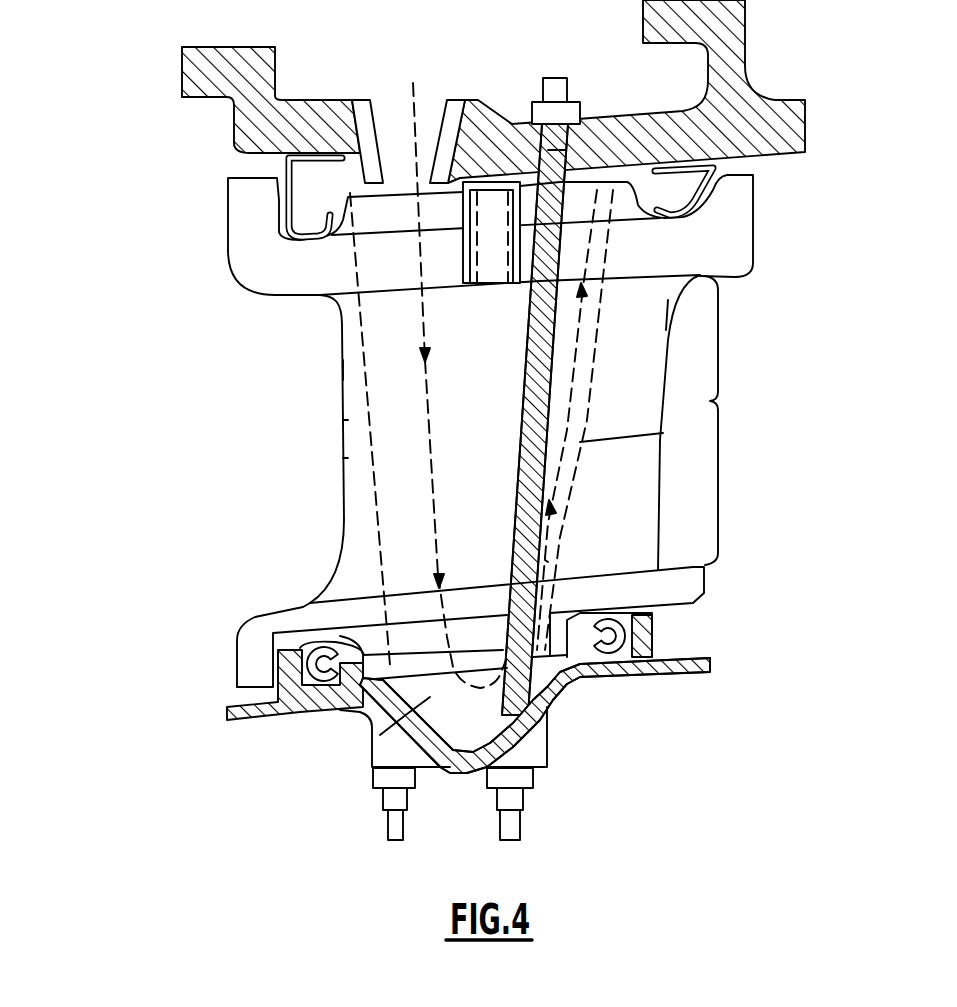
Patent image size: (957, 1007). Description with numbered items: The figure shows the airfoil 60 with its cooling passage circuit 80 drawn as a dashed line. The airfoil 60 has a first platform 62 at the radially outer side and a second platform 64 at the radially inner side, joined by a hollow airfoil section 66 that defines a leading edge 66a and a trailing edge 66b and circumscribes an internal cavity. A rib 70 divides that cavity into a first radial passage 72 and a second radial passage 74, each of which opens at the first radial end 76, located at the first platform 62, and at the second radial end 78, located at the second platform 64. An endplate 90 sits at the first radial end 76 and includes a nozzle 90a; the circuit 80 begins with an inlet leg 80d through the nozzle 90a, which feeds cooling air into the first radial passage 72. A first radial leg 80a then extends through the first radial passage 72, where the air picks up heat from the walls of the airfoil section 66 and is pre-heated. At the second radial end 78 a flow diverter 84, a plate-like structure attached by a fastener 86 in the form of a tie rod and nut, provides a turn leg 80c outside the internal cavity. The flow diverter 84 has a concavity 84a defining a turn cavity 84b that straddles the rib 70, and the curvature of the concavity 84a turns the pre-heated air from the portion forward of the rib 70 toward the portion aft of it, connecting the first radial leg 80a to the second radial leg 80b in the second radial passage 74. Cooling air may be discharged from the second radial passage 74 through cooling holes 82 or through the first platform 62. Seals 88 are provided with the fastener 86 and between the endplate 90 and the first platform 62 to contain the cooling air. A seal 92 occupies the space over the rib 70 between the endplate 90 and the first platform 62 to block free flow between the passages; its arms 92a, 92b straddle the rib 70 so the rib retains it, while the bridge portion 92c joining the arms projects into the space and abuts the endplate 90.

The airfoil 60 is at (155, 442).
The first platform 62 is at (727, 230).
The second platform 64 is at (693, 587).
The airfoil section 66 is at (712, 401).
The leading edge 66a is at (341, 367).
The trailing edge 66b is at (700, 277).
The rib 70 is at (485, 393).
The first radial passage 72 is at (417, 440).
The second radial passage 74 is at (566, 440).
The first radial end 76 is at (205, 238).
The second radial end 78 is at (228, 692).
The cooling passage circuit 80 is at (416, 310).
The first radial leg 80a is at (430, 517).
The second radial leg 80b is at (570, 342).
The turn leg 80c is at (453, 668).
The inlet leg 80d is at (422, 110).
The cooling holes 82 is at (641, 437).
The flow diverter 84 is at (597, 670).
The concavity 84a is at (383, 783).
The turn cavity 84b is at (413, 730).
The fastener 86 is at (520, 570).
The seals 88 is at (290, 193).
The endplate 90 is at (765, 114).
The nozzle 90a is at (382, 100).
The seal 92 is at (481, 176).
The arm 92a is at (568, 213).
The arm 92b is at (490, 216).
The bridge portion 92c is at (510, 140).